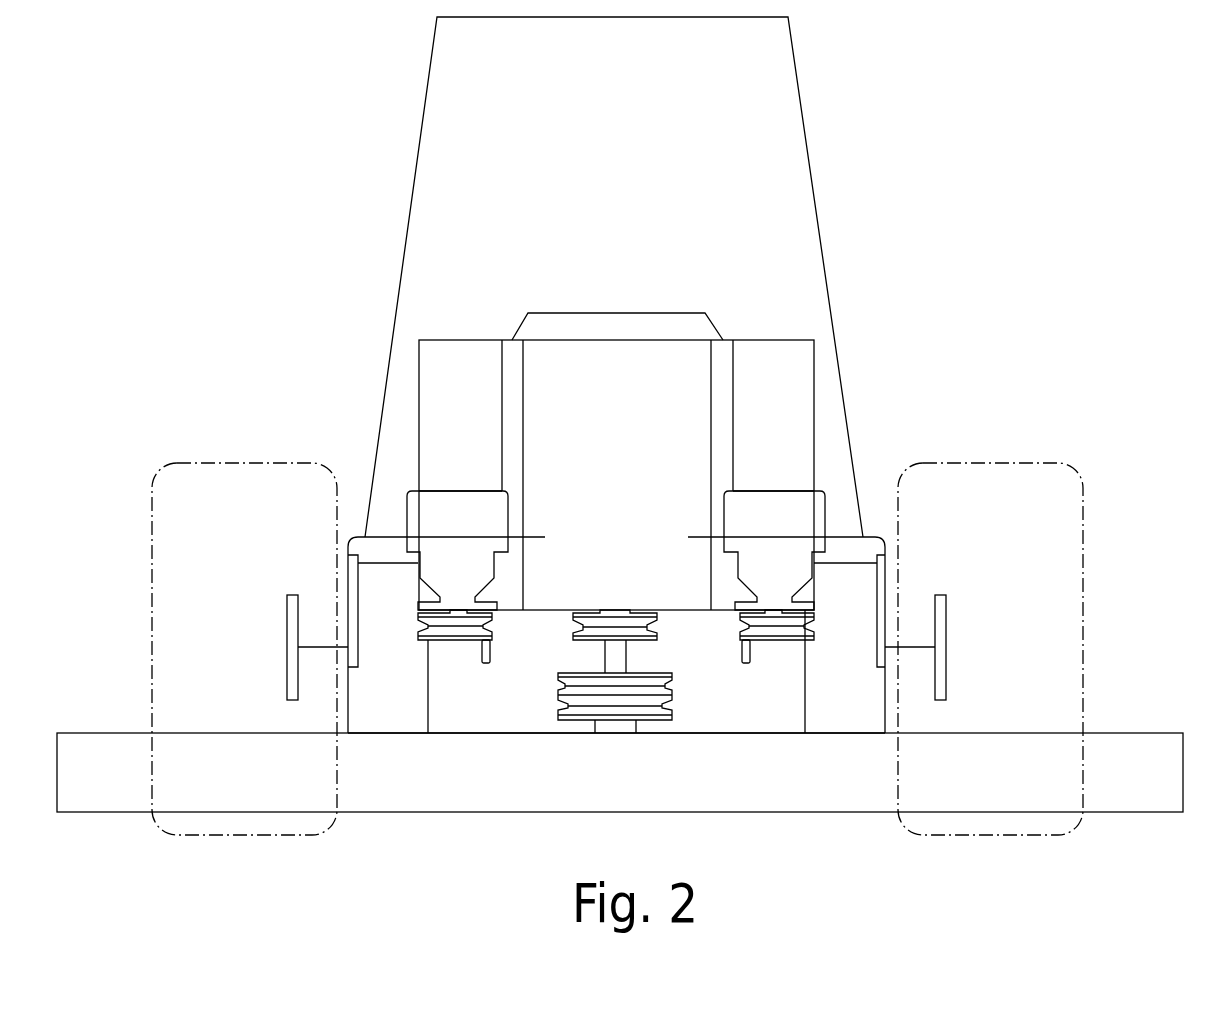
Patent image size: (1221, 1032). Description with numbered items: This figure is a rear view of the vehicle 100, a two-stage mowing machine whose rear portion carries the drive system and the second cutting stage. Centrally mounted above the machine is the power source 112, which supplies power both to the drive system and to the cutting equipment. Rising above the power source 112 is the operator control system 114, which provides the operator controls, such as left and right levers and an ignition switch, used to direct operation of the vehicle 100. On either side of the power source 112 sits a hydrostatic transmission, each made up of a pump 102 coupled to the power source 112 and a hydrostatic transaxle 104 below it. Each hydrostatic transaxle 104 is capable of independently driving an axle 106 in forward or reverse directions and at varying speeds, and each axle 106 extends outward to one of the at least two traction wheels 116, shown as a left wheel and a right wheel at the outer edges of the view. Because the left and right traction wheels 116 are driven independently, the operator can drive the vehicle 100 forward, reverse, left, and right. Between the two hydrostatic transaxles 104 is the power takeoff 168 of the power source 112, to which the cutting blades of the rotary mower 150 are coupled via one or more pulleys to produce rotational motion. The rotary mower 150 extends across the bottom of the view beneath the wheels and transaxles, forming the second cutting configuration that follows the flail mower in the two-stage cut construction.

The vehicle 100 is at (372, 148).
The pump 102 is at (455, 489).
The hydrostatic transaxle 104 is at (428, 700).
The axle 106 is at (295, 595).
The power source 112 is at (597, 312).
The operator control system 114 is at (812, 177).
The traction wheels 116 is at (228, 463).
The rotary mower 150 is at (1110, 733).
The power takeoff 168 is at (623, 612).